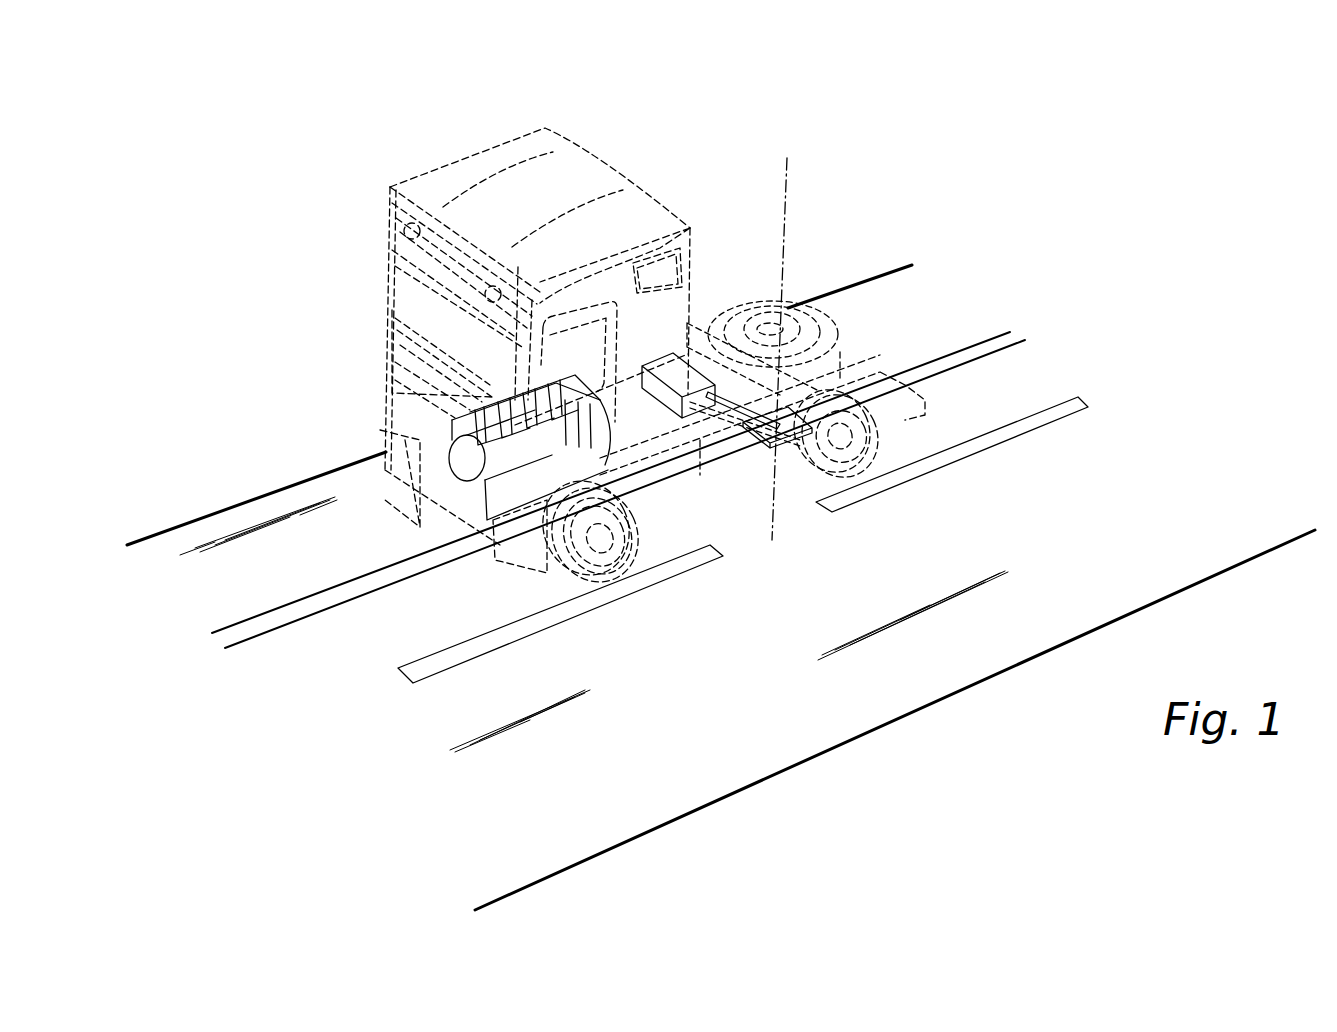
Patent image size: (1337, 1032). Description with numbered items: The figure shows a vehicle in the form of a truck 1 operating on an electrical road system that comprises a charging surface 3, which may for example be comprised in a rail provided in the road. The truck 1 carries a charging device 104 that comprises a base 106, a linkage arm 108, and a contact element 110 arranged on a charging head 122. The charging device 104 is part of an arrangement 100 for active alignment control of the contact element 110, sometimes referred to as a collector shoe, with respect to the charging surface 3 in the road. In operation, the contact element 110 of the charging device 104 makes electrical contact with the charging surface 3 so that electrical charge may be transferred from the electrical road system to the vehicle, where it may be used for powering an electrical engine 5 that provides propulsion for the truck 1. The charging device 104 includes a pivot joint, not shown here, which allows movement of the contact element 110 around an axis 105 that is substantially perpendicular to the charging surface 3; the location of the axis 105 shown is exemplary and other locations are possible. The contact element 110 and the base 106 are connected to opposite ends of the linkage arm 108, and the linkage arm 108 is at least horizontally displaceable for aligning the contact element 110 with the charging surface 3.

The truck 1 is at (338, 115).
The charging surface 3 is at (368, 585).
The electrical engine 5 is at (452, 420).
The arrangement 100 is at (791, 374).
The charging device 104 is at (711, 342).
The axis 105 is at (787, 188).
The base 106 is at (668, 368).
The linkage arm 108 is at (723, 410).
The contact element 110 is at (780, 422).
The charging head 122 is at (795, 406).